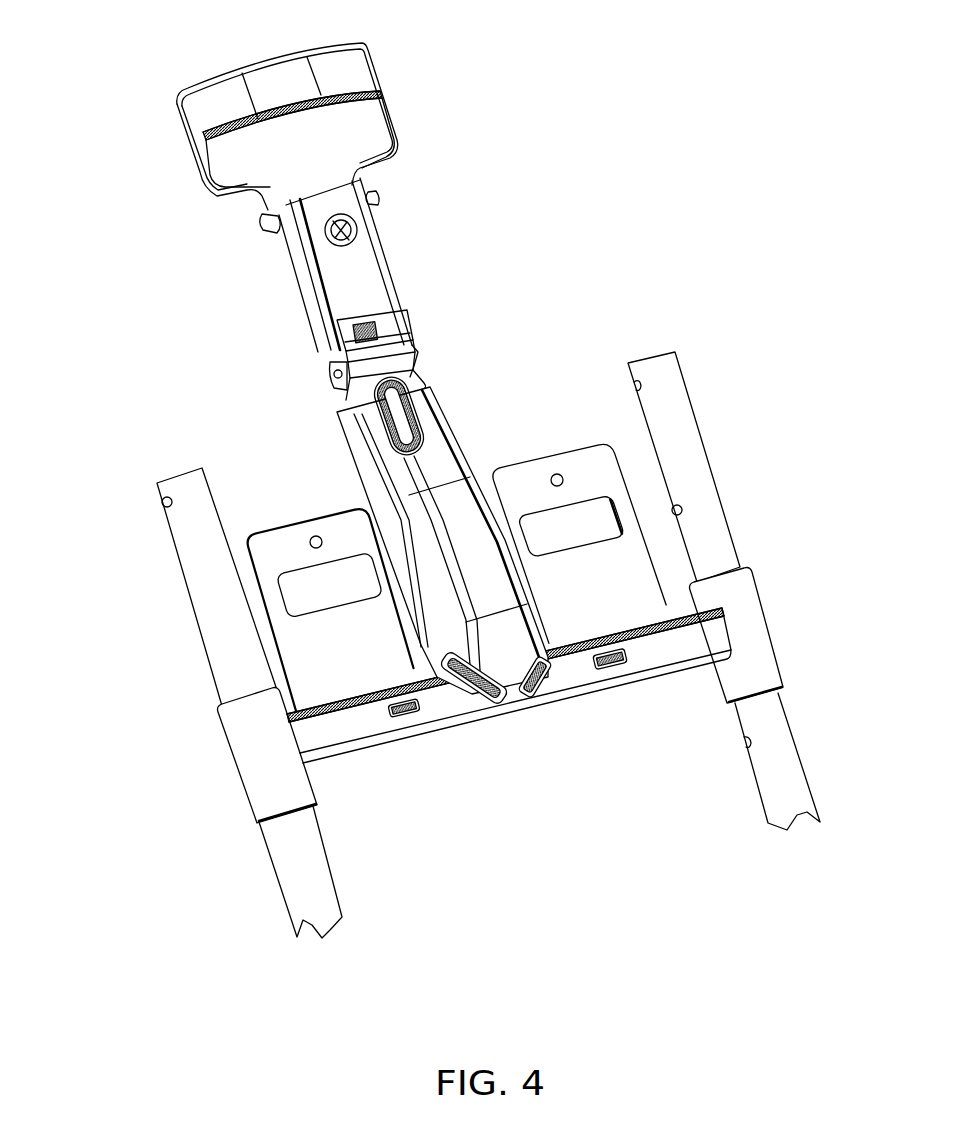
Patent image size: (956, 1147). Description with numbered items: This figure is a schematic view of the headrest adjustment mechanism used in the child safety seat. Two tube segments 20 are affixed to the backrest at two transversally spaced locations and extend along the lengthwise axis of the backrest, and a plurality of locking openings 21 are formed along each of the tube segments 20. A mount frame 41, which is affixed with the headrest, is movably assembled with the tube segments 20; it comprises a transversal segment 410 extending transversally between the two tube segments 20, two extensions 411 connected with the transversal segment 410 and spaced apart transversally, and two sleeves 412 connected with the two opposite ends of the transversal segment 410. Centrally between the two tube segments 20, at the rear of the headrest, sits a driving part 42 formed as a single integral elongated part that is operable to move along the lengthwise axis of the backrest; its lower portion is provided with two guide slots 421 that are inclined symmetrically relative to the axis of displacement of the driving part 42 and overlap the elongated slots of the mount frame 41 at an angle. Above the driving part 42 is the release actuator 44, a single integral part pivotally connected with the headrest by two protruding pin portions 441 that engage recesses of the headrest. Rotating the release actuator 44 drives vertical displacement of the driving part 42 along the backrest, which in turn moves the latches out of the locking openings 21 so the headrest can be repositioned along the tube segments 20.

The tube segment 20 is at (213, 582).
The locking opening 21 is at (164, 500).
The mount frame 41 is at (469, 627).
The transversal segment 410 is at (670, 642).
The extension 411 is at (300, 650).
The sleeve 412 is at (262, 752).
The driving part 42 is at (436, 472).
The guide slot 421 is at (487, 697).
The release actuator 44 is at (362, 130).
The protruding pin portion 441 is at (262, 228).